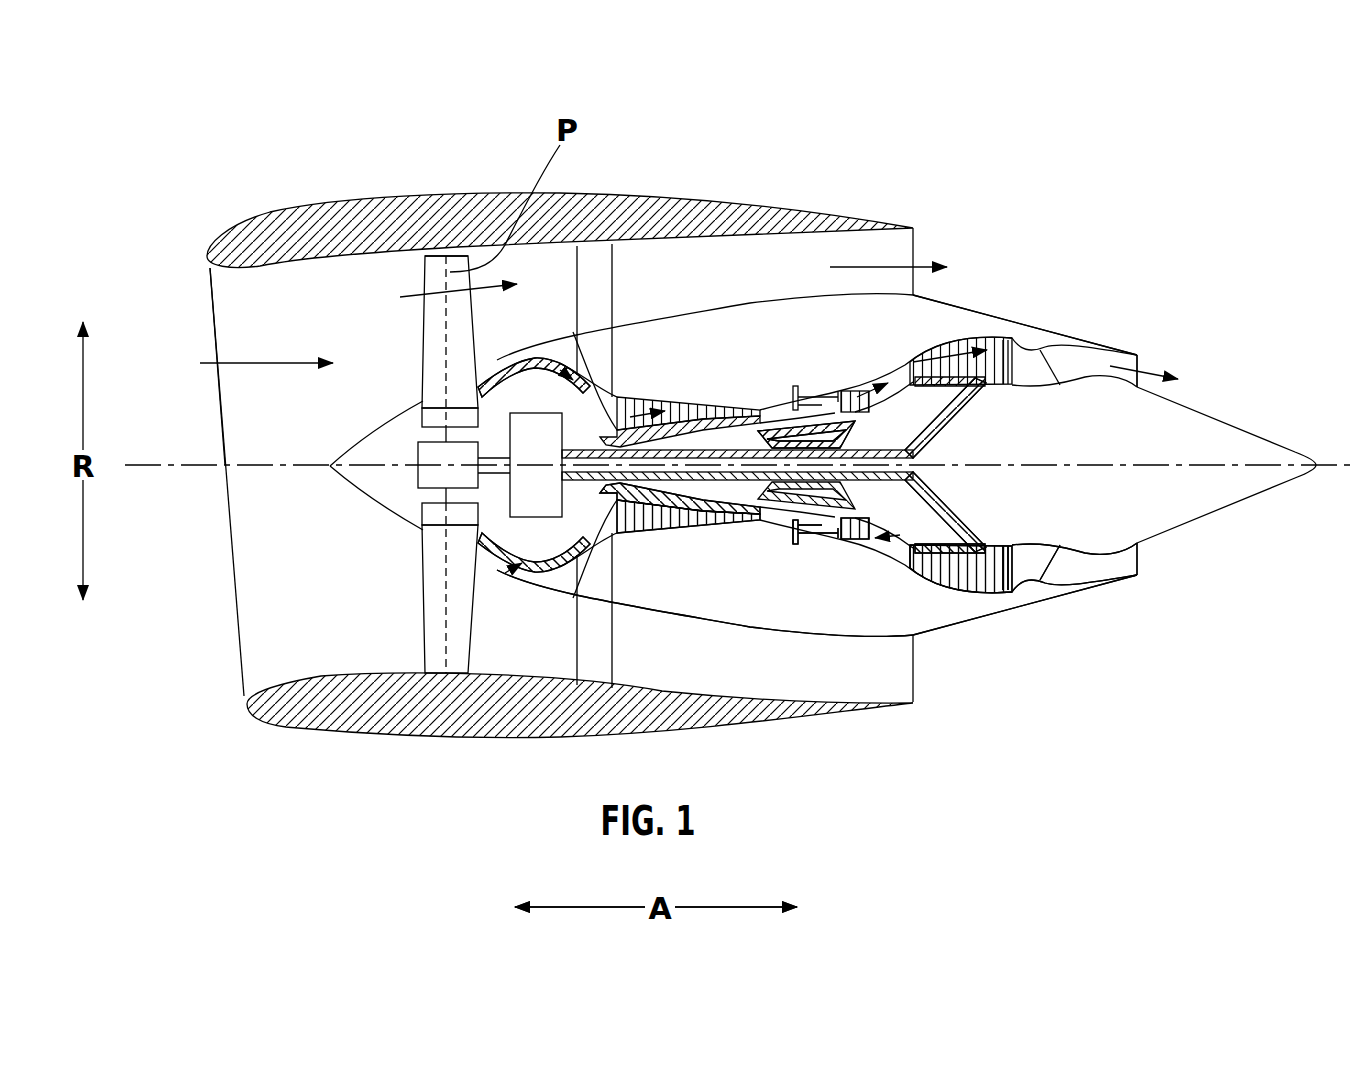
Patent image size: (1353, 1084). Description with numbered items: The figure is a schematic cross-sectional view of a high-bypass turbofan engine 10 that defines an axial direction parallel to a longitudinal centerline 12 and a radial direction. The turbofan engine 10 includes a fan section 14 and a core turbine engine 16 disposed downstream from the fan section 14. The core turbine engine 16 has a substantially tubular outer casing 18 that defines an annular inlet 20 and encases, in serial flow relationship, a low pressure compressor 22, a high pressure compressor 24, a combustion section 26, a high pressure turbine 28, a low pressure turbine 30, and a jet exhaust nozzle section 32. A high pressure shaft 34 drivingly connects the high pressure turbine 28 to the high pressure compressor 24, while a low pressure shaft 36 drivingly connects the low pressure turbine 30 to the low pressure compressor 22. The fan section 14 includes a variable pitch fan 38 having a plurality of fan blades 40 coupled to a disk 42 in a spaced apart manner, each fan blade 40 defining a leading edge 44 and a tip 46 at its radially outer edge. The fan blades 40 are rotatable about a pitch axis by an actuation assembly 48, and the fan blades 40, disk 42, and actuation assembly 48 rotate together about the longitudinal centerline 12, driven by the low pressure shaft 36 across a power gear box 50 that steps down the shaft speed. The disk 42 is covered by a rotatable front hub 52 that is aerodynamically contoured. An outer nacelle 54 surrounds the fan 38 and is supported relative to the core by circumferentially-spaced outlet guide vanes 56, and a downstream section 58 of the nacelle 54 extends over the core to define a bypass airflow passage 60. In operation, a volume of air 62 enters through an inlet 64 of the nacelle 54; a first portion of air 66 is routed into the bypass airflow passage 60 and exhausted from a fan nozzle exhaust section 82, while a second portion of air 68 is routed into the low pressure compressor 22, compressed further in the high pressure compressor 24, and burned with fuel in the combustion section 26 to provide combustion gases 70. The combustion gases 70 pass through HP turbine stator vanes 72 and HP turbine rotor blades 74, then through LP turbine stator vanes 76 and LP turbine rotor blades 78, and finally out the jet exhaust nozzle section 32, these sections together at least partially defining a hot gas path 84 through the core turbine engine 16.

The turbofan engine 10 is at (1057, 207).
The longitudinal centerline 12 is at (1080, 465).
The fan section 14 is at (462, 157).
The core turbine engine 16 is at (782, 360).
The outer casing 18 is at (772, 630).
The annular inlet 20 is at (505, 573).
The low pressure compressor 22 is at (571, 549).
The high pressure compressor 24 is at (640, 527).
The combustion section 26 is at (812, 535).
The high pressure turbine 28 is at (900, 535).
The low pressure turbine 30 is at (997, 593).
The jet exhaust nozzle section 32 is at (1057, 587).
The high pressure shaft 34 is at (823, 438).
The low pressure shaft 36 is at (930, 442).
The variable pitch fan 38 is at (387, 518).
The fan blades 40 is at (420, 615).
The disk 42 is at (437, 417).
The leading edge 44 is at (413, 357).
The tip 46 is at (440, 250).
The actuation assembly 48 is at (420, 447).
The power gear box 50 is at (548, 437).
The rotatable front hub 52 is at (347, 484).
The outer nacelle 54 is at (470, 738).
The outlet guide vanes 56 is at (612, 273).
The downstream section 58 is at (833, 217).
The bypass airflow passage 60 is at (840, 262).
The volume of air 62 is at (259, 363).
The inlet 64 is at (245, 682).
The first portion of air 66 is at (444, 291).
The second portion of air 68 is at (497, 358).
The combustion gases 70 is at (960, 350).
The HP turbine stator vanes 72 is at (828, 535).
The HP turbine rotor blades 74 is at (853, 527).
The LP turbine stator vanes 76 is at (920, 575).
The LP turbine rotor blades 78 is at (933, 583).
The fan nozzle exhaust section 82 is at (903, 252).
The hot gas path 84 is at (902, 367).